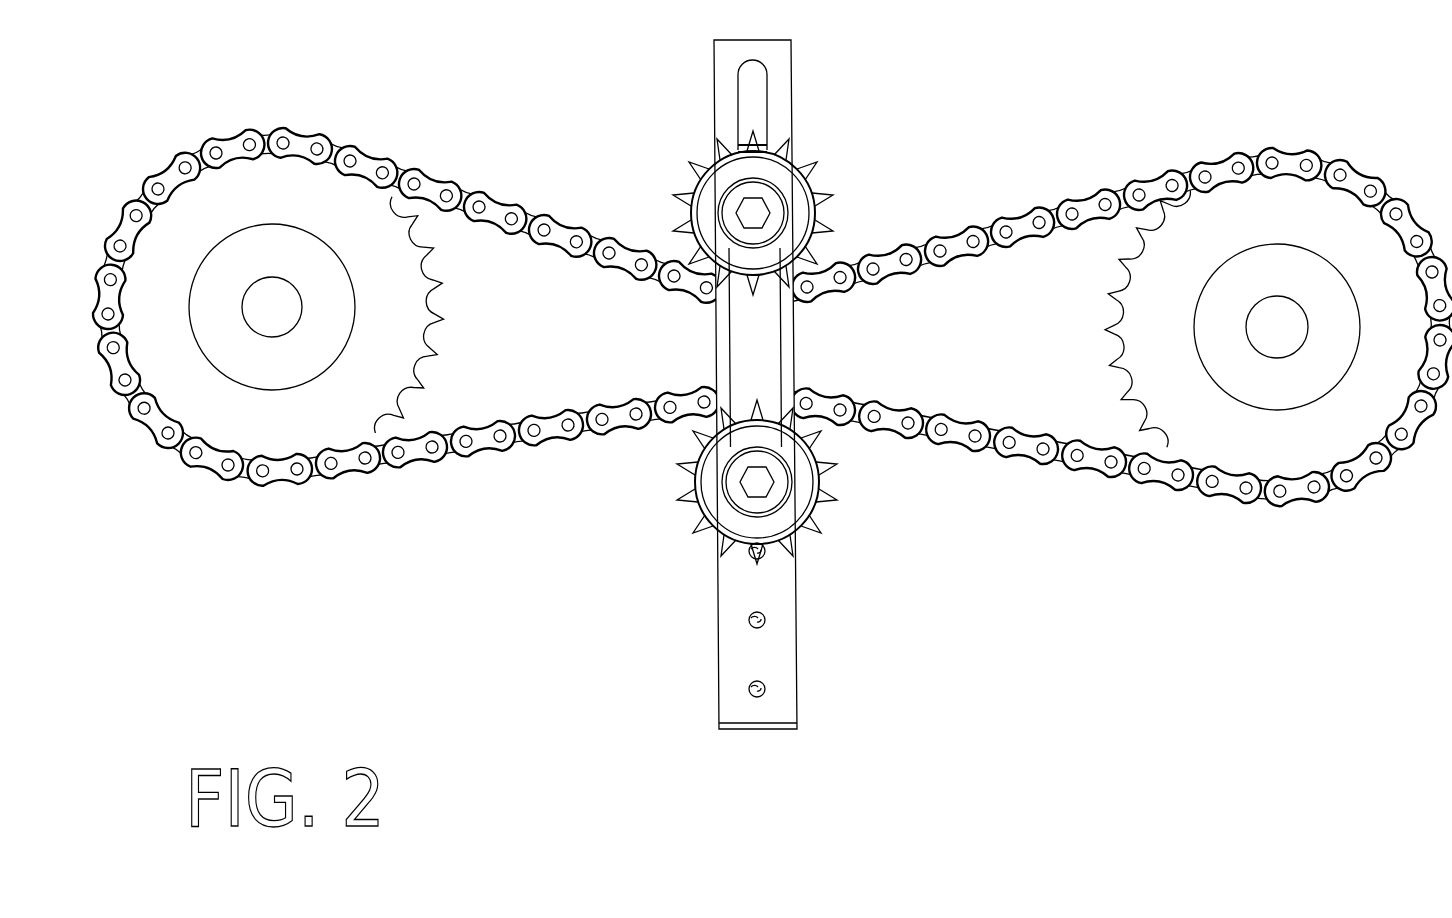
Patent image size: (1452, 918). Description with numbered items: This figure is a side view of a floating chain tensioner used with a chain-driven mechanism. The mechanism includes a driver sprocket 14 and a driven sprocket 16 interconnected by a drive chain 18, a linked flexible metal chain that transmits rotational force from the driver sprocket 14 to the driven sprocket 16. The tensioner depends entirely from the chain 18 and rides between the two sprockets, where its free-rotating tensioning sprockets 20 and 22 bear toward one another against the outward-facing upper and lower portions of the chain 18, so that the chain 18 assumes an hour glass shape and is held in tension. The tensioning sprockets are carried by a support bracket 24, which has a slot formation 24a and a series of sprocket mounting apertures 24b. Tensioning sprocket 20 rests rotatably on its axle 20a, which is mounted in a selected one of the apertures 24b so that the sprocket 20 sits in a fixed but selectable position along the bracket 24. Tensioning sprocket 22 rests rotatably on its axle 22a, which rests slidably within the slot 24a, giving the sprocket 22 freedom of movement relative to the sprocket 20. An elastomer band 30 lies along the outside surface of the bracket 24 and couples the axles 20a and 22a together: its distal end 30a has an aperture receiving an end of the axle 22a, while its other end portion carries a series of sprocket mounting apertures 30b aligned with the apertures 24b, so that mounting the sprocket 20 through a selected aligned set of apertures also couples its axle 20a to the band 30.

The driver sprocket 14 is at (1110, 294).
The driven sprocket 16 is at (425, 345).
The drive chain 18 is at (575, 265).
The tensioning sprocket 20 is at (832, 497).
The axle 20a is at (755, 480).
The tensioning sprocket 22 is at (838, 196).
The axle 22a is at (757, 190).
The support bracket 24 is at (786, 52).
The slot formation 24a is at (758, 98).
The sprocket mounting apertures 24b is at (763, 552).
The elastomer band 30 is at (730, 665).
The distal end 30a is at (728, 177).
The sprocket mounting apertures 30b is at (752, 556).